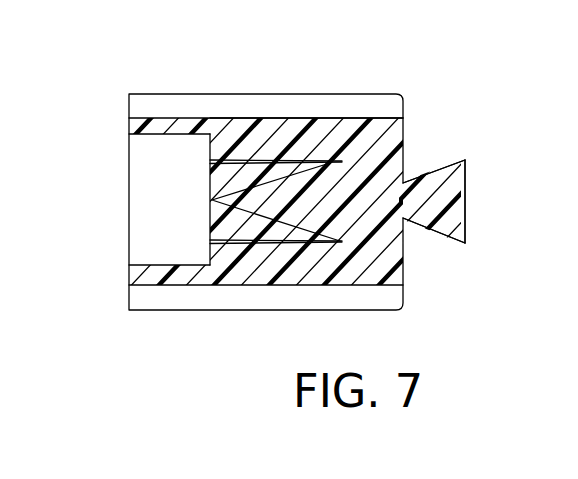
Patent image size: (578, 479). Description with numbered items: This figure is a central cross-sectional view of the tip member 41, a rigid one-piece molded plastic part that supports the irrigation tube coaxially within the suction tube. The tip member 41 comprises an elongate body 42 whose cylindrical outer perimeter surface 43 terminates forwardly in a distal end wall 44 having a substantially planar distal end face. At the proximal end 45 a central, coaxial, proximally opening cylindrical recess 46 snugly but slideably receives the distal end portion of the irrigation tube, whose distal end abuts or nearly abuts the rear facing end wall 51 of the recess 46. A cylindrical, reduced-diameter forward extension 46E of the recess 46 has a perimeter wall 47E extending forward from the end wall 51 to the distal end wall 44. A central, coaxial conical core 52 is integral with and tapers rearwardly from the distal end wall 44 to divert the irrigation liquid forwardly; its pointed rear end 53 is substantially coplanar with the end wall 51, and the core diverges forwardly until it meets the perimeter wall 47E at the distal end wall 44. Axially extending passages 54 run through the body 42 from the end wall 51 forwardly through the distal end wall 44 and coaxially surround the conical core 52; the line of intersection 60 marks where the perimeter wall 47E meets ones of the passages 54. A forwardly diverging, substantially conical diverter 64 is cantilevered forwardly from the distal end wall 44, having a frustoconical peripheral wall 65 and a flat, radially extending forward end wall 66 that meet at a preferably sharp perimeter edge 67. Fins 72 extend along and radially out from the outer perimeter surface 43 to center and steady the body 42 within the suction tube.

The tip member 41 is at (348, 55).
The elongate body 42 is at (318, 130).
The outer perimeter surface 43 is at (270, 130).
The distal end wall 44 is at (397, 262).
The proximal end 45 is at (128, 275).
The recess 46 is at (160, 150).
The forward extension of the recess 46E is at (230, 177).
The perimeter wall of the recess extension 47E is at (253, 164).
The rear facing end wall of the recess 51 is at (210, 157).
The conical core 52 is at (297, 208).
The pointed rear end of the conical core 53 is at (210, 210).
The passages 54 is at (281, 165).
The line of intersection 60 is at (276, 236).
The conical diverter 64 is at (460, 180).
The frustoconical peripheral wall 65 is at (446, 168).
The forward end wall 66 is at (465, 205).
The perimeter edge 67 is at (465, 160).
The fins 72 is at (148, 105).